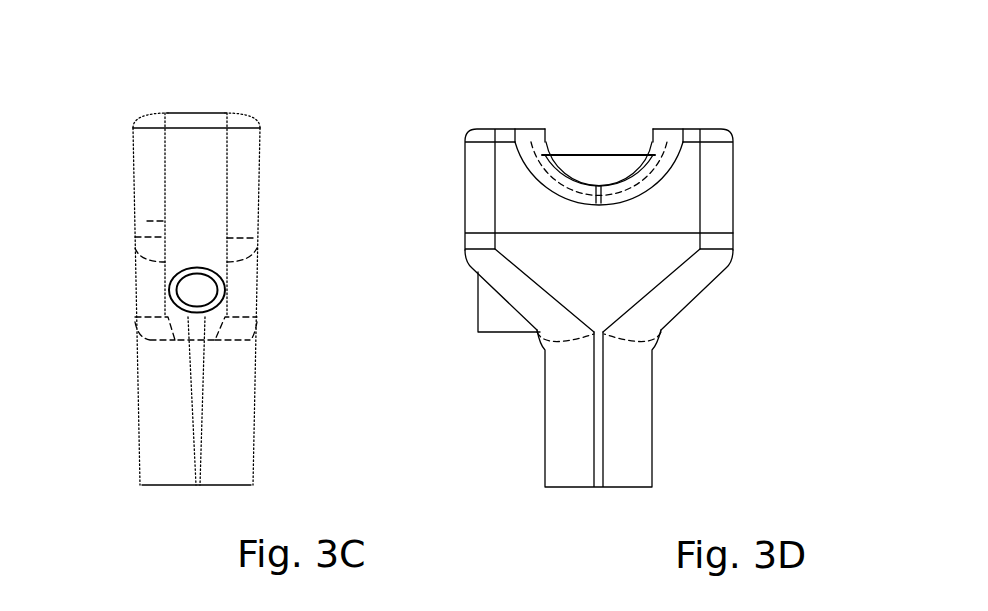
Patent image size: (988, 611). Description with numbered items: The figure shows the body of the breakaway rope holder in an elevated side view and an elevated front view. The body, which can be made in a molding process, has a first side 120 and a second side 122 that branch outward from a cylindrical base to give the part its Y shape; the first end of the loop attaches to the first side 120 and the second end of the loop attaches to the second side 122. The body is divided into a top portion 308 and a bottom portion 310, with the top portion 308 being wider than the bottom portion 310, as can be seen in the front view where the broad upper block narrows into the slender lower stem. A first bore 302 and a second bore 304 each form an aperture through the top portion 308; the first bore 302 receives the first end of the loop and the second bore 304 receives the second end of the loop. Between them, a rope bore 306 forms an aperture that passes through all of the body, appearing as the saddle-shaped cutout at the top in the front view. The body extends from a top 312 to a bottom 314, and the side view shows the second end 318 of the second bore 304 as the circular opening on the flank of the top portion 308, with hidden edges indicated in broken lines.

In FIG. 3C, the first side 120 is at (190, 187).
In FIG. 3D, the first side 120 is at (729, 190).
In FIG. 3D, the second side 122 is at (465, 189).
In FIG. 3D, the first bore 302 is at (500, 116).
In FIG. 3C, the second bore 304 is at (135, 310).
In FIG. 3D, the second bore 304 is at (695, 116).
In FIG. 3D, the rope bore 306 is at (600, 138).
In FIG. 3D, the top portion 308 is at (522, 246).
In FIG. 3D, the bottom portion 310 is at (577, 432).
In FIG. 3C, the top 312 is at (187, 113).
In FIG. 3C, the bottom 314 is at (172, 488).
In FIG. 3C, the second end 318 is at (193, 289).